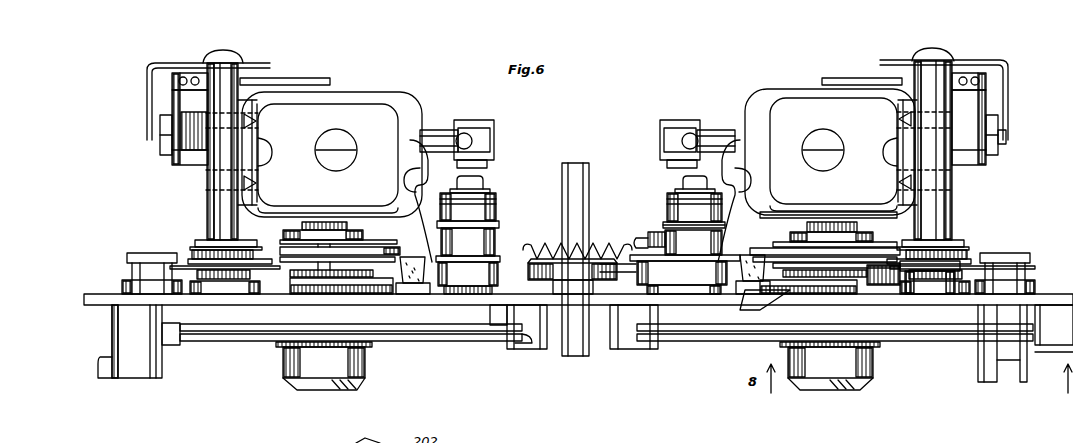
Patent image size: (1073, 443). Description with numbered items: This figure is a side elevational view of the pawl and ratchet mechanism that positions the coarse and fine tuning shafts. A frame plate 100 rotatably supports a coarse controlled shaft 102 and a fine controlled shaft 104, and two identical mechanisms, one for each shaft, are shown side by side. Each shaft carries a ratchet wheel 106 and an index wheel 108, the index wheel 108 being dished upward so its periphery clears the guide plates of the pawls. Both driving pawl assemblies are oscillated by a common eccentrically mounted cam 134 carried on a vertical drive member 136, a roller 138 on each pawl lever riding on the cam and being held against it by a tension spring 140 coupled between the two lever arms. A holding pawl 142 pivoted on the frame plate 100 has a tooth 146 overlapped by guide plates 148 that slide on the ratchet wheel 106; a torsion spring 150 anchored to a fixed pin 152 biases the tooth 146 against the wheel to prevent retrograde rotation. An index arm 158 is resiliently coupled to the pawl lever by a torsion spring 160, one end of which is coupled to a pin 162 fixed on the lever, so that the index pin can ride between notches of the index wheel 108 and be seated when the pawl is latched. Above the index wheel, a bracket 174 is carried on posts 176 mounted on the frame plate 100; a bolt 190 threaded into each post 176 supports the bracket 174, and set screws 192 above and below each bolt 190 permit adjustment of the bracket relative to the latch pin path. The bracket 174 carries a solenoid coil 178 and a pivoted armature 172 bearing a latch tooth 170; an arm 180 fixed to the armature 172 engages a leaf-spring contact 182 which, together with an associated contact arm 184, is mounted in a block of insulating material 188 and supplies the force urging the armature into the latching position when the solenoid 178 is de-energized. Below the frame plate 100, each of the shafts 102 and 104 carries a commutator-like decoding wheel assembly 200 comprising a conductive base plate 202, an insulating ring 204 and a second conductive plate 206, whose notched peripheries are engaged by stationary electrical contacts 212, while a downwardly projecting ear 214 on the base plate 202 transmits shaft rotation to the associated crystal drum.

The frame plate 100 is at (96, 297).
The coarse controlled shaft 102 is at (287, 376).
The fine controlled shaft 104 is at (868, 372).
The ratchet wheel 106 is at (778, 275).
The index wheel 108 is at (428, 276).
The cam 134 is at (572, 290).
The rack bar 136 is at (565, 178).
The roller 138 is at (656, 273).
The tension spring 140 is at (545, 242).
The holding pawl 142 is at (912, 258).
The tooth 146 is at (396, 245).
The plates 148 is at (795, 218).
The torsion spring 150 is at (172, 272).
The fixed pin 152 is at (150, 268).
The index arm 158 is at (660, 240).
The torsion spring 160 is at (678, 214).
The pin 162 is at (668, 224).
The latch tooth 170 is at (466, 134).
The armature 172 is at (432, 130).
The bracket 174 is at (262, 104).
The posts 176 is at (224, 55).
The solenoid coil 178 is at (366, 92).
The arm 180 is at (270, 80).
The leaf-spring contact 182 is at (193, 71).
The contact arm 184 is at (170, 112).
The block of insulating material 188 is at (176, 166).
The bolt 190 is at (262, 152).
The set screws 192 is at (258, 121).
The decoding wheel assembly 200 is at (443, 356).
The base plate 202 is at (228, 341).
The insulating ring 204 is at (297, 343).
The second plate 206 is at (422, 333).
The stationary electrical contacts 212 is at (178, 362).
The ear 214 is at (1030, 360).